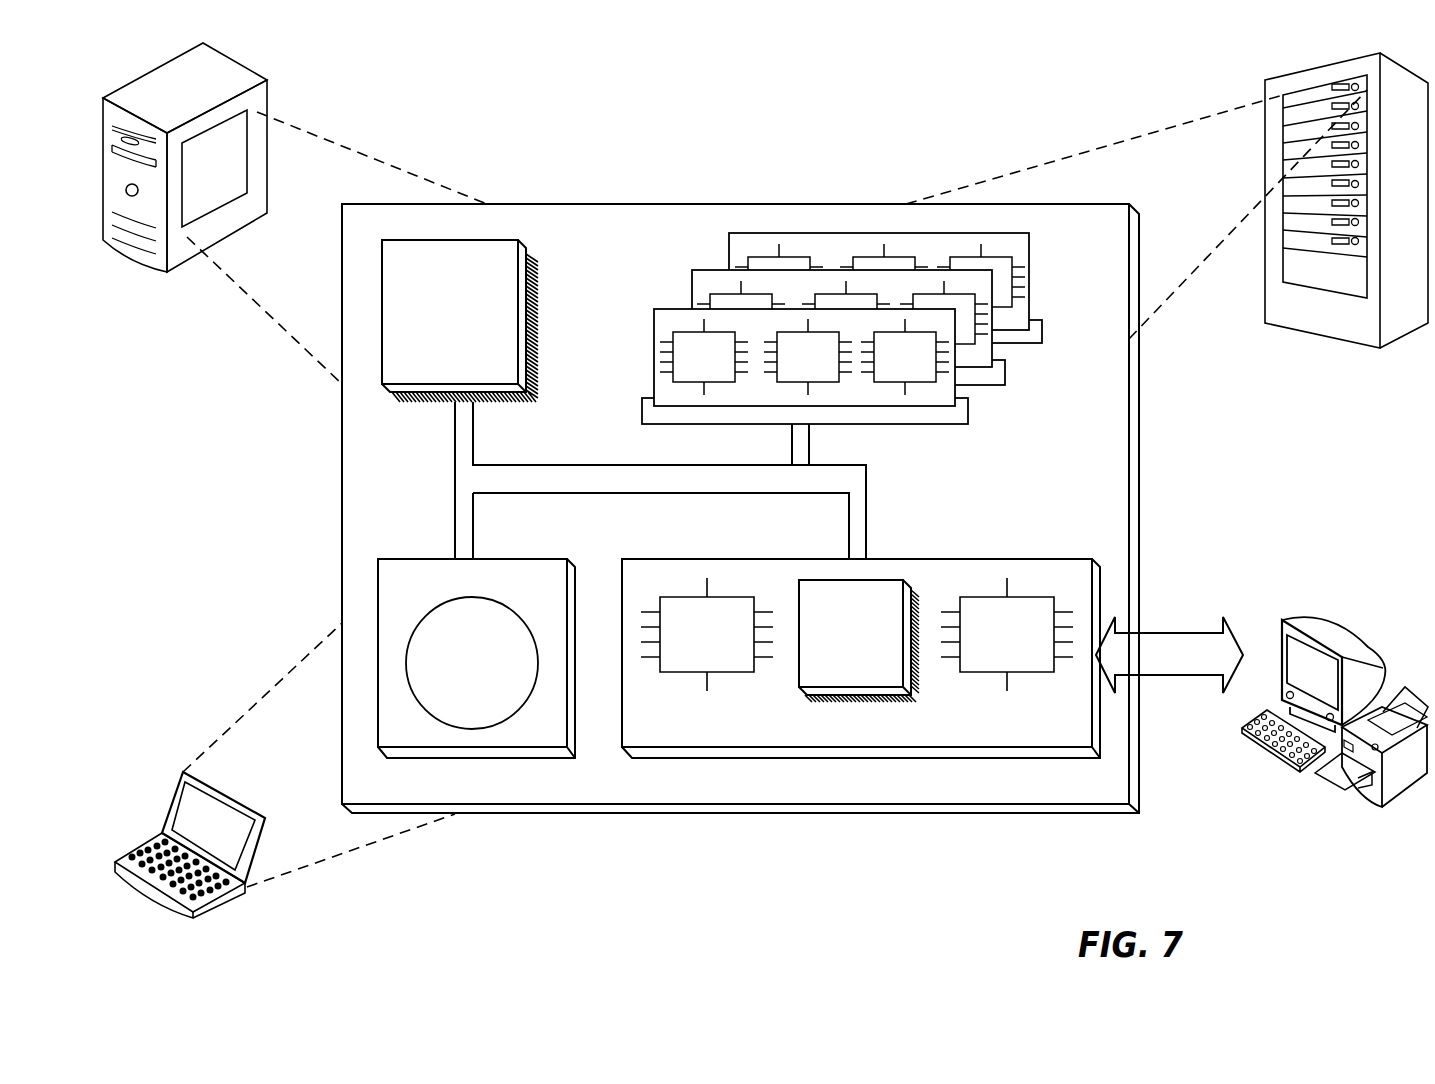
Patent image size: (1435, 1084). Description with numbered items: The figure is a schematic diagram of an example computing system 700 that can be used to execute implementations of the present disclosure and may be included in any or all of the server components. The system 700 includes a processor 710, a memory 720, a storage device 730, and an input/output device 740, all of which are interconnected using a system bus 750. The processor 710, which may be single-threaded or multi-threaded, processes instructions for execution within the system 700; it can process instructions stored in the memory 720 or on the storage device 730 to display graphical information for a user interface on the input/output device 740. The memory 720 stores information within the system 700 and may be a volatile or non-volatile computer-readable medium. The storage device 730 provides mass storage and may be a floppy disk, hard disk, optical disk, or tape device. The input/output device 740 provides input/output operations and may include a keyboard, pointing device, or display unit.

The computing system 700 is at (552, 122).
The processor 710 is at (508, 377).
The memory 720 is at (1036, 383).
The storage device 730 is at (555, 739).
The input/output device 740 is at (1281, 626).
The system bus 750 is at (655, 484).